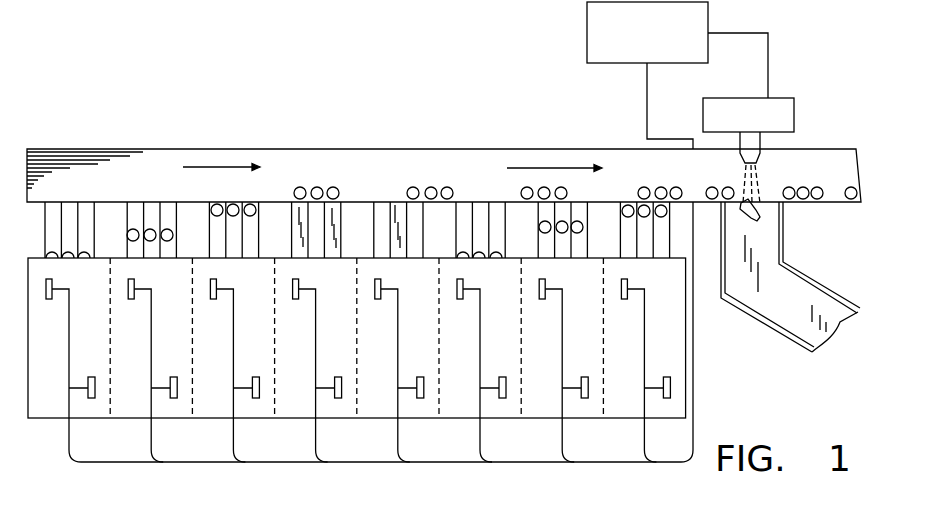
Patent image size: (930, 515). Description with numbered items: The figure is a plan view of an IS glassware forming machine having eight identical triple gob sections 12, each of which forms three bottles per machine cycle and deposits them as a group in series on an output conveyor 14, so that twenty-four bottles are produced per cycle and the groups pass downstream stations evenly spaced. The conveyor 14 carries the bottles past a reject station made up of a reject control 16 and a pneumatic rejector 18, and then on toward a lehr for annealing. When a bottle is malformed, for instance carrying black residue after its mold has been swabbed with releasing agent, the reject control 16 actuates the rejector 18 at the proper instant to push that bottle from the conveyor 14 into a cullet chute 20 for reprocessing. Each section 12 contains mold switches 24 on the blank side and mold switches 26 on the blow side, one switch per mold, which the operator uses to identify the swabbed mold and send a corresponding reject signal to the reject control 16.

The triple gob section 12 is at (360, 332).
The output conveyor 14 is at (584, 150).
The reject control 16 is at (597, 63).
The pneumatic rejector 18 is at (702, 107).
The cullet chute 20 is at (803, 290).
The mold switches 24 is at (95, 377).
The mold switches 26 is at (51, 299).